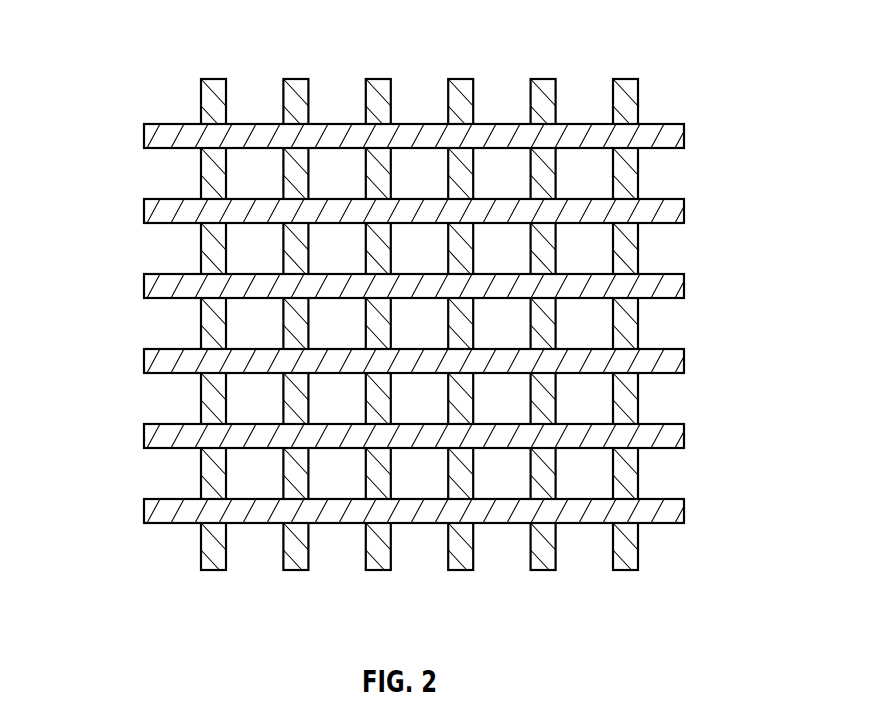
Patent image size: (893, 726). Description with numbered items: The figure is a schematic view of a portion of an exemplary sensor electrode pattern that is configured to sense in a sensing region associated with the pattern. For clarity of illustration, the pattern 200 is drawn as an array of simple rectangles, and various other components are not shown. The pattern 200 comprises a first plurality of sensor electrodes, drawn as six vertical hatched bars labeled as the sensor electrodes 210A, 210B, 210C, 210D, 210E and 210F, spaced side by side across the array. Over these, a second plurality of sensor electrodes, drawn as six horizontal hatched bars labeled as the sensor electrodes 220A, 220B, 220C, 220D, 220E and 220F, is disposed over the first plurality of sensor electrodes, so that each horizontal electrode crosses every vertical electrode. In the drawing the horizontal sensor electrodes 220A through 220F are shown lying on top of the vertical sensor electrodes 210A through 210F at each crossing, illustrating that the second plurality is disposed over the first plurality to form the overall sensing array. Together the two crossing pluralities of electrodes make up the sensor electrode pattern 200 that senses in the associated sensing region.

The pattern 200 is at (692, 42).
The sensor electrode of the first plurality 210A is at (196, 354).
The sensor electrode of the first plurality 210B is at (278, 354).
The sensor electrode of the first plurality 210C is at (361, 354).
The sensor electrode of the first plurality 210D is at (443, 354).
The sensor electrode of the first plurality 210E is at (526, 354).
The sensor electrode of the first plurality 210F is at (608, 354).
The sensor electrode of the second plurality 220A is at (365, 126).
The sensor electrode of the second plurality 220B is at (365, 201).
The sensor electrode of the second plurality 220C is at (365, 276).
The sensor electrode of the second plurality 220D is at (365, 351).
The sensor electrode of the second plurality 220E is at (365, 426).
The sensor electrode of the second plurality 220F is at (365, 501).